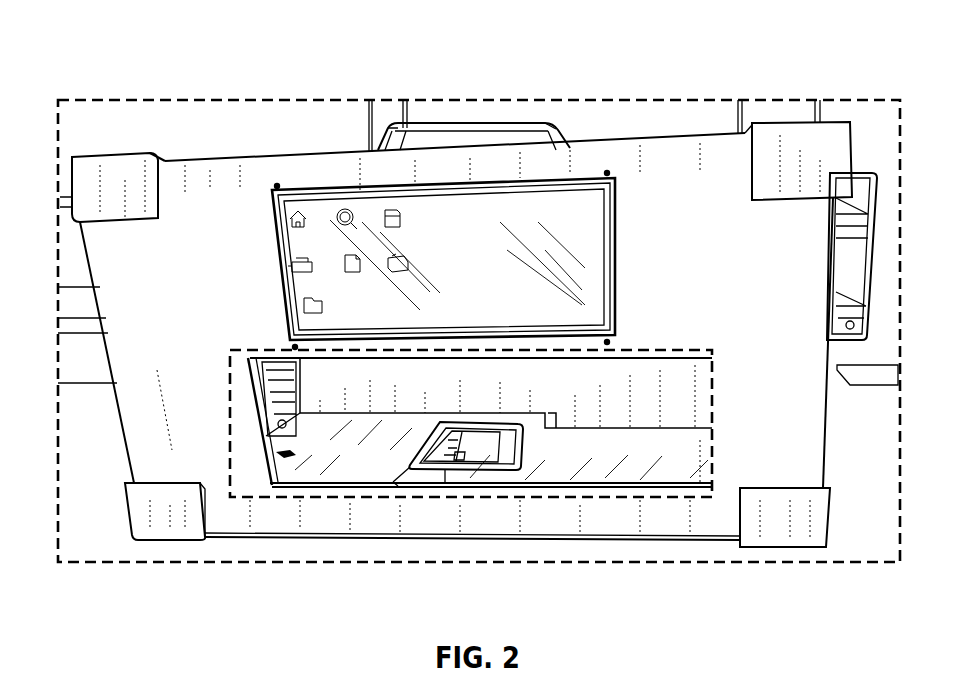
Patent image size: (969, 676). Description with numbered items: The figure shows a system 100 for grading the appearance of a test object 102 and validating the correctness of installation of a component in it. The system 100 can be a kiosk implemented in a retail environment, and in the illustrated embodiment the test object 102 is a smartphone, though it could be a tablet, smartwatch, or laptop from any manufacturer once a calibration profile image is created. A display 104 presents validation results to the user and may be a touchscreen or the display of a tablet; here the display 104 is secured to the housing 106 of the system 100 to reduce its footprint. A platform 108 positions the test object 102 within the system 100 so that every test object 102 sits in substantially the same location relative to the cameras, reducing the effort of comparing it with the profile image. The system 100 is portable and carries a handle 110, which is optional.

The system 100 is at (110, 42).
The test object 102 is at (463, 468).
The display 104 is at (330, 213).
The housing 106 is at (676, 168).
The platform 108 is at (332, 450).
The handle 110 is at (464, 122).